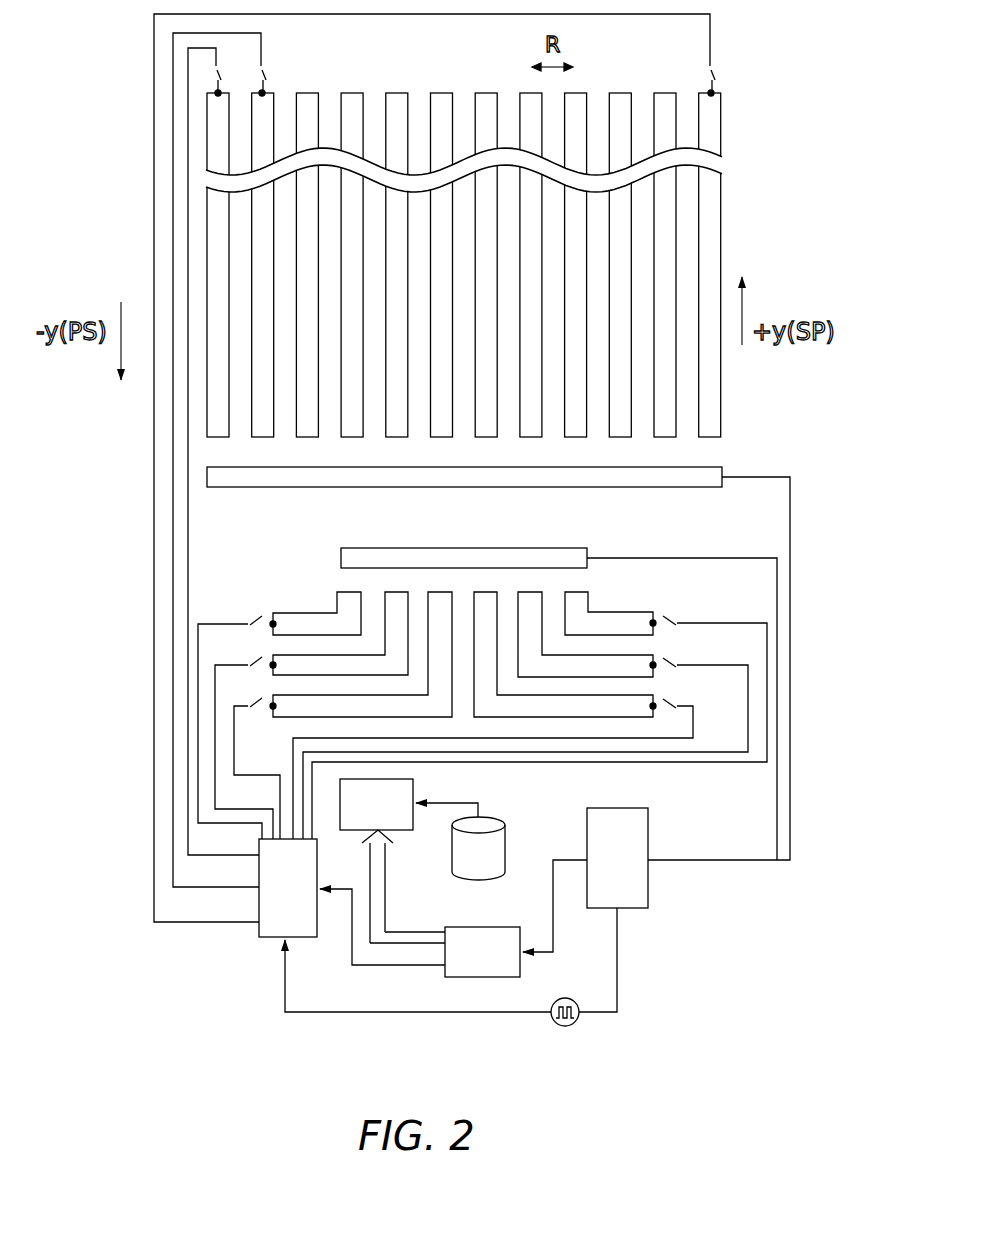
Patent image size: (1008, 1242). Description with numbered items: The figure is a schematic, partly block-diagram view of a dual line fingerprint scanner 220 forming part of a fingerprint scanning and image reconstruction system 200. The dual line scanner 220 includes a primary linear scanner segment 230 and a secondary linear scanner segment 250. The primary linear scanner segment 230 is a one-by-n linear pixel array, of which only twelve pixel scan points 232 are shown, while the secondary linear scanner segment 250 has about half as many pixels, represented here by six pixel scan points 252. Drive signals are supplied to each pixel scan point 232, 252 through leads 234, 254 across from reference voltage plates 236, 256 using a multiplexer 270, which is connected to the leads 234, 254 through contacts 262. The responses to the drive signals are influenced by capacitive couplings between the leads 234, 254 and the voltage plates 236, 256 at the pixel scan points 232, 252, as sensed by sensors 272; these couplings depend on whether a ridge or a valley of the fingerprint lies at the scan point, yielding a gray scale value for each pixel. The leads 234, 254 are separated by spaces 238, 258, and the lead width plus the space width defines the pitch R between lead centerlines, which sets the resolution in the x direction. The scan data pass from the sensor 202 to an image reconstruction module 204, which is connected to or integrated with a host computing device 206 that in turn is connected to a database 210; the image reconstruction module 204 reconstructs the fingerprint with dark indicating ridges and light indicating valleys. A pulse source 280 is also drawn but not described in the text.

The fingerprint scanning and image reconstruction system 200 is at (361, 992).
The sensor 202 is at (482, 952).
The image reconstruction module 204 is at (591, 844).
The host computing device 206 is at (376, 804).
The database 210 is at (478, 848).
The dual line fingerprint scanner 220 is at (228, 529).
The primary linear scanner segment 230 is at (336, 504).
The pixel scan points 232 is at (448, 450).
The leads 234 is at (262, 305).
The reference voltage plate 236 is at (672, 480).
The spaces 238 is at (465, 106).
The secondary linear scanner segment 250 is at (524, 680).
The pixel scan points 252 is at (596, 583).
The leads 254 is at (323, 620).
The reference voltage plate 256 is at (562, 548).
The spaces 258 is at (465, 603).
The contacts 262 is at (218, 93).
The multiplexer 270 is at (288, 888).
The sensors 272 is at (617, 858).
The pulse source 280 is at (568, 1026).